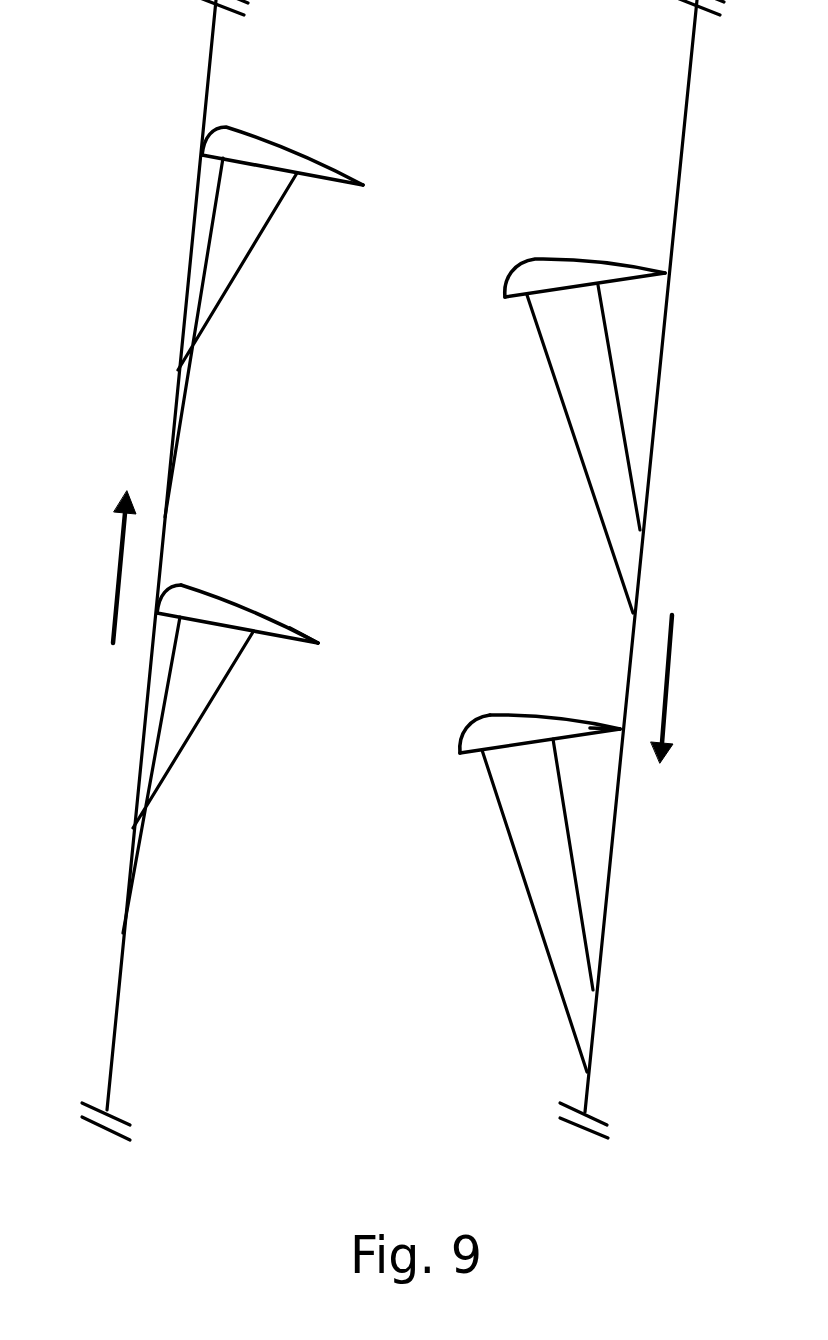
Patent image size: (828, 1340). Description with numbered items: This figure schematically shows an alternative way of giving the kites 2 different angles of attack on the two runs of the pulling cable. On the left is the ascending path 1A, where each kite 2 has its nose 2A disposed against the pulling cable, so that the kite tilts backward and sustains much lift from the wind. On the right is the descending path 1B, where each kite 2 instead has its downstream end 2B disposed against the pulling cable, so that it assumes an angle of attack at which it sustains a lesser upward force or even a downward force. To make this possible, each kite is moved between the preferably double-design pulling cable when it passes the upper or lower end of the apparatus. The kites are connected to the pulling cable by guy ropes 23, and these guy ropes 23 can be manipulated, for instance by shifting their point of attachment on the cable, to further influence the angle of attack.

The ascending path 1A is at (115, 1040).
The descending path 1B is at (607, 893).
The kite 2 is at (228, 607).
The nose 2A is at (183, 597).
The downstream end 2B is at (289, 627).
The guy ropes 23 is at (168, 697).